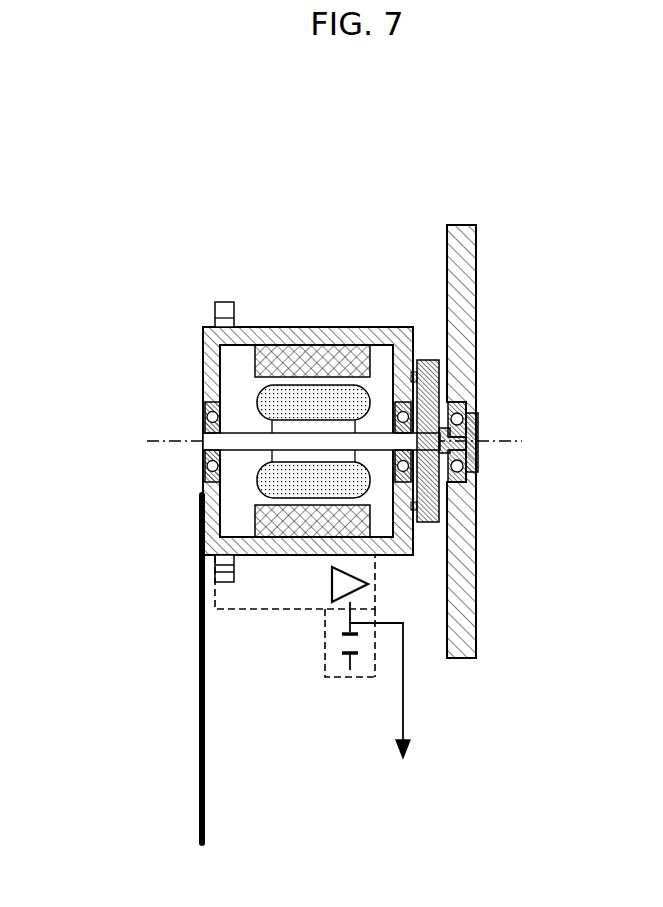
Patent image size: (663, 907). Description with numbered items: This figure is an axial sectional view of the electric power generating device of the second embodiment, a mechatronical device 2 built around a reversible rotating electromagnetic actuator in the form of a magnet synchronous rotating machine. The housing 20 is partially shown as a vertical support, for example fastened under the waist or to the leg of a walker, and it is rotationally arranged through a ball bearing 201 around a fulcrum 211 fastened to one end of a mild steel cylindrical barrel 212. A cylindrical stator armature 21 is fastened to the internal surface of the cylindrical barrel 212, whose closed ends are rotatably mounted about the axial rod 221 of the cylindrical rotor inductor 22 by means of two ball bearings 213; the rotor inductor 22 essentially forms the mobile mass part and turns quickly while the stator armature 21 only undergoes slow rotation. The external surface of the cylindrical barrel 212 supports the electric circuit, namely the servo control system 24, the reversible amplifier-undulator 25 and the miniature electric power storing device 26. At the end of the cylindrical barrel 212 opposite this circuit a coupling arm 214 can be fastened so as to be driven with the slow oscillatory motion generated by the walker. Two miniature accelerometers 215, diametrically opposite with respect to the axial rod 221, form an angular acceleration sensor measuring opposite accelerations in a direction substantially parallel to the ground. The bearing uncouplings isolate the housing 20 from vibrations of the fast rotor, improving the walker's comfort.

The mechatronical device 2 is at (110, 160).
The housing 20 is at (451, 240).
The stator armature 21 is at (256, 360).
The rotor inductor 22 is at (323, 397).
The servo control system 24 is at (242, 600).
The reversible amplifier-undulator 25 is at (330, 590).
The miniature electric power storing device 26 is at (360, 668).
The ball bearing 201 is at (467, 472).
The fulcrum 211 is at (427, 360).
The cylindrical barrel 212 is at (273, 335).
The ball bearings 213 is at (206, 468).
The coupling arm 214 is at (200, 700).
The accelerometers 215 is at (225, 316).
The axial rod 221 is at (205, 440).